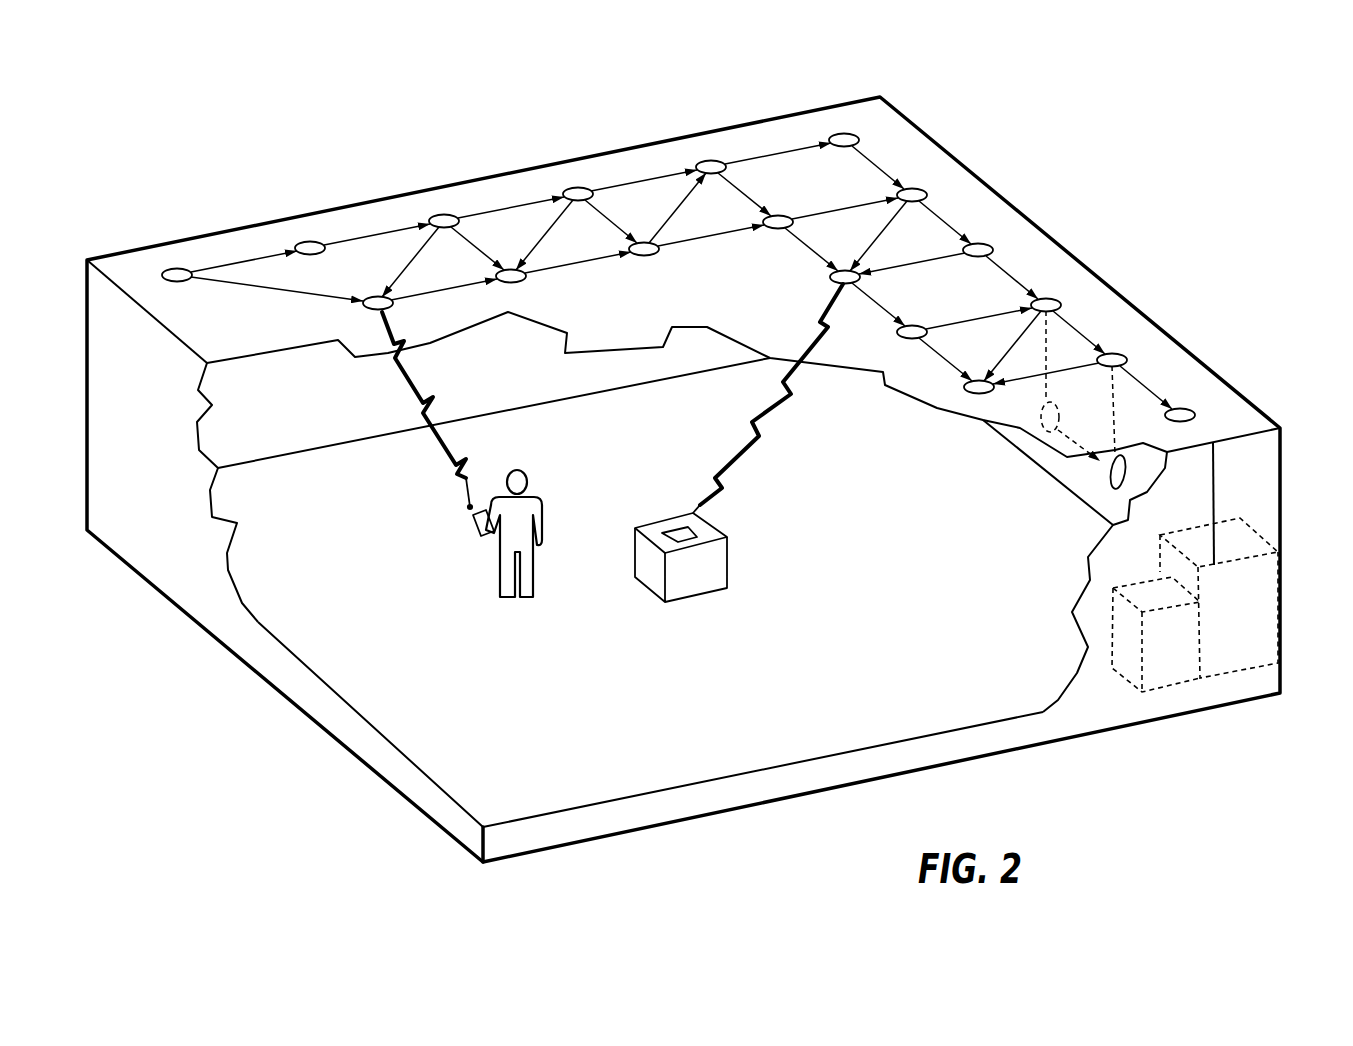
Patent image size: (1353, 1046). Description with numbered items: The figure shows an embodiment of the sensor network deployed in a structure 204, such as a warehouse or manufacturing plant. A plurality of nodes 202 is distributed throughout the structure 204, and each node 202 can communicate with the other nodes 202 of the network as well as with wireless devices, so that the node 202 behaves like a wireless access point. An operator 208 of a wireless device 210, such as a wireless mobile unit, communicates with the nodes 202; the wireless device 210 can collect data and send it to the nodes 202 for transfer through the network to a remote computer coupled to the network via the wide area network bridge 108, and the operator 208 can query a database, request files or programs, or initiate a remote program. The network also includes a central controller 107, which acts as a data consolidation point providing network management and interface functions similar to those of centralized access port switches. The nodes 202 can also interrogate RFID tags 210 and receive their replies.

The node 202 is at (310, 247).
The structure 204 is at (1027, 178).
The operator 208 is at (543, 510).
The wireless device 210 is at (472, 530).
The wide area network bridge 108 is at (1235, 593).
The central controller 107 is at (1168, 648).